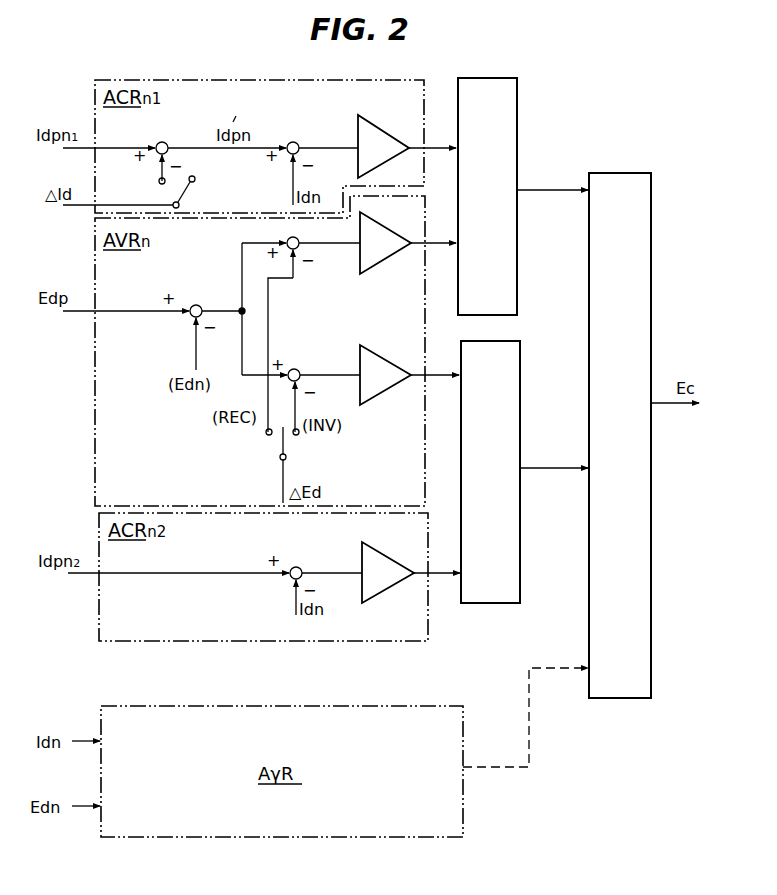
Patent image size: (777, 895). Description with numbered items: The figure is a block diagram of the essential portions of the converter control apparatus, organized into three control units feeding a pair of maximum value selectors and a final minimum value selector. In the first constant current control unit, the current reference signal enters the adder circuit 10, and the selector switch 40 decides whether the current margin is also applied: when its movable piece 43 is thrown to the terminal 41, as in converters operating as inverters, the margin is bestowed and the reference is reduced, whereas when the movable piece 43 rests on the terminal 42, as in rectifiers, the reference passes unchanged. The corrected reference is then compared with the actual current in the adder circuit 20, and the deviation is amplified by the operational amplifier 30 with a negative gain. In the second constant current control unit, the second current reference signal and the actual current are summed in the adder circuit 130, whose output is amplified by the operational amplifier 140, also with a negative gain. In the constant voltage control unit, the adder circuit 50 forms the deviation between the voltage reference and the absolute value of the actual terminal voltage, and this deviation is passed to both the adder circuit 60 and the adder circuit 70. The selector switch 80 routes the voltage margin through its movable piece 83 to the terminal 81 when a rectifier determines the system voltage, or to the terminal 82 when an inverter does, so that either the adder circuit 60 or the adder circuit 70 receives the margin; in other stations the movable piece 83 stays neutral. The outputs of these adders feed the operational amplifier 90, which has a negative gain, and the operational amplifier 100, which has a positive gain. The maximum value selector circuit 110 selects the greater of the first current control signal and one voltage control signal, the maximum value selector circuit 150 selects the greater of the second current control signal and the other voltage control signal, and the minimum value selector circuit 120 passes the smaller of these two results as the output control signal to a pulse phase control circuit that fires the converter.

The adder circuit 10 is at (163, 136).
The adder circuit 20 is at (292, 136).
The operational amplifier 30 is at (392, 124).
The selector switch 40 is at (174, 182).
The terminal 41 is at (158, 180).
The terminal 42 is at (205, 180).
The movable piece 43 is at (187, 192).
The adder circuit 50 is at (195, 310).
The adder circuit 60 is at (303, 234).
The adder circuit 70 is at (304, 366).
The selector switch 80 is at (283, 451).
The terminal 81 is at (264, 436).
The terminal 82 is at (300, 437).
The movable piece 83 is at (300, 451).
The operational amplifier 90 is at (385, 256).
The operational amplifier 100 is at (393, 357).
The maximum value selector circuit 110 is at (517, 122).
The minimum value selector circuit 120 is at (640, 699).
The adder circuit 130 is at (311, 564).
The operational amplifier 140 is at (393, 559).
The maximum value selector circuit 150 is at (520, 358).